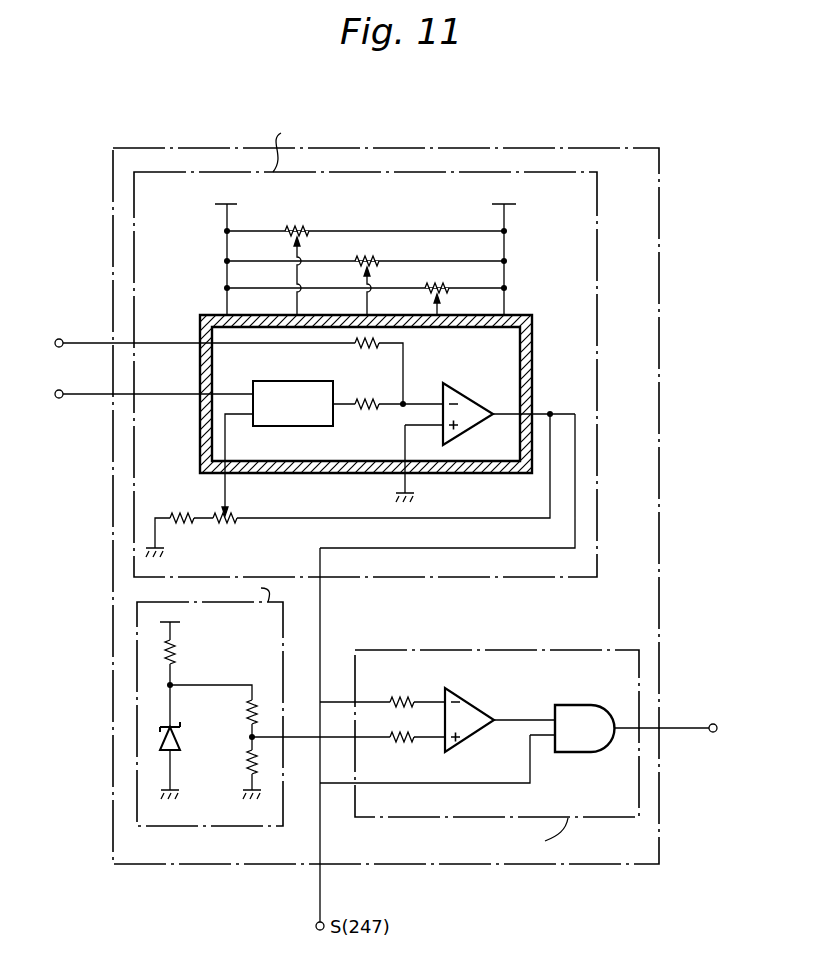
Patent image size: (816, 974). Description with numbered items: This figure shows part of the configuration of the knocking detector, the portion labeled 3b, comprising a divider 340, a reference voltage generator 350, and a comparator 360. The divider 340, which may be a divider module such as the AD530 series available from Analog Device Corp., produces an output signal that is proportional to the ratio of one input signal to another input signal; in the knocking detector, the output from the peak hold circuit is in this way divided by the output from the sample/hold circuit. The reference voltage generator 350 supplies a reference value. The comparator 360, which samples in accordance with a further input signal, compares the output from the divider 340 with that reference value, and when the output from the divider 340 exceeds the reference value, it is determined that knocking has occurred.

The circuit section 3b is at (672, 223).
The divider 340 is at (617, 280).
The reference voltage generator 350 is at (197, 828).
The comparator 360 is at (502, 650).